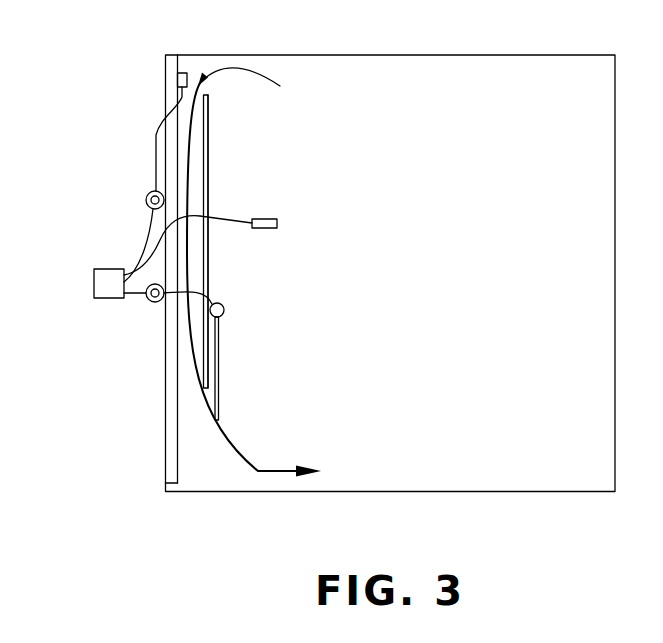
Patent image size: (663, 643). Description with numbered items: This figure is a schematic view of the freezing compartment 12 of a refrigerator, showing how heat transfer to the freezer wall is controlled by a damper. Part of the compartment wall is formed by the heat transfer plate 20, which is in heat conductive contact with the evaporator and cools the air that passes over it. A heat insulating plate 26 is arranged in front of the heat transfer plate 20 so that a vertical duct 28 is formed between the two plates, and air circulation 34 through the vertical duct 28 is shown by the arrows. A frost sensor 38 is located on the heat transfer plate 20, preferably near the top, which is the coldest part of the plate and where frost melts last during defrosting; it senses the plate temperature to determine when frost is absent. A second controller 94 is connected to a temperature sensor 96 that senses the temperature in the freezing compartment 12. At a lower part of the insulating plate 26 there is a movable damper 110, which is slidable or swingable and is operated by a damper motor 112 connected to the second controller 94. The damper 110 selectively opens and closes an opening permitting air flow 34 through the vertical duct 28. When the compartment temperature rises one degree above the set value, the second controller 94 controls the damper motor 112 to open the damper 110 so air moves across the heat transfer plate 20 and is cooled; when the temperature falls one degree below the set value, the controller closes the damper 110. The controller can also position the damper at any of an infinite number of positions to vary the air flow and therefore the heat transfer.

The freezing compartment 12 is at (499, 382).
The heat transfer plate 20 is at (178, 463).
The heat insulating plate 26 is at (208, 177).
The vertical duct 28 is at (196, 150).
The air circulation 34 is at (245, 67).
The frost sensor 38 is at (185, 73).
The second controller 94 is at (107, 269).
The temperature sensor 96 is at (267, 220).
The movable damper 110 is at (219, 362).
The damper motor 112 is at (224, 308).